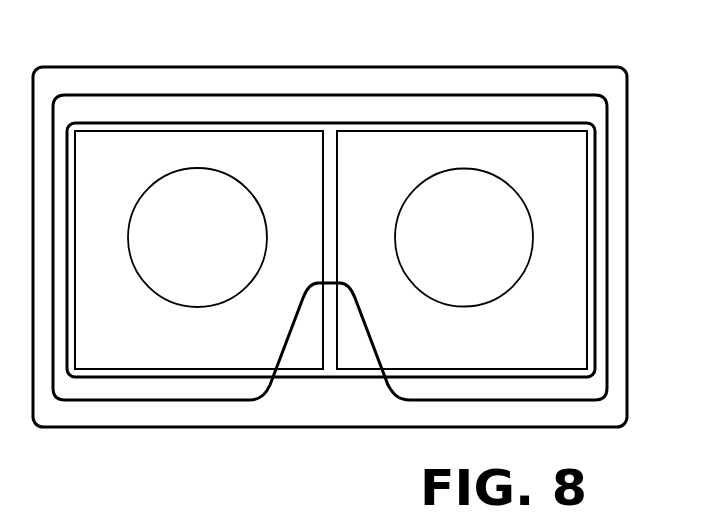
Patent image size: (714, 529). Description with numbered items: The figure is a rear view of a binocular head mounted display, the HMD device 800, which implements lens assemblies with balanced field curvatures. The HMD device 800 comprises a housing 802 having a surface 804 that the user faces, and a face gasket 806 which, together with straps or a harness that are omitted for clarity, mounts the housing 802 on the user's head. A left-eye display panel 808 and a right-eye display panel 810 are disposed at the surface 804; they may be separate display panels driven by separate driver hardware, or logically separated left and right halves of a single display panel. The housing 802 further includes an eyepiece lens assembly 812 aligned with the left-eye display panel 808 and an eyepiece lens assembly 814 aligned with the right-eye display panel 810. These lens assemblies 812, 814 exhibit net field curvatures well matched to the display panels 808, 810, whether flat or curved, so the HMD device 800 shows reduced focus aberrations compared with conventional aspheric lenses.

The HMD device 800 is at (361, 242).
The housing 802 is at (627, 222).
The surface 804 is at (361, 262).
The face gasket 806 is at (223, 402).
The left-eye display panel 808 is at (300, 360).
The right-eye display panel 810 is at (360, 360).
The eyepiece lens assembly 812 is at (267, 240).
The eyepiece lens assembly 814 is at (395, 240).